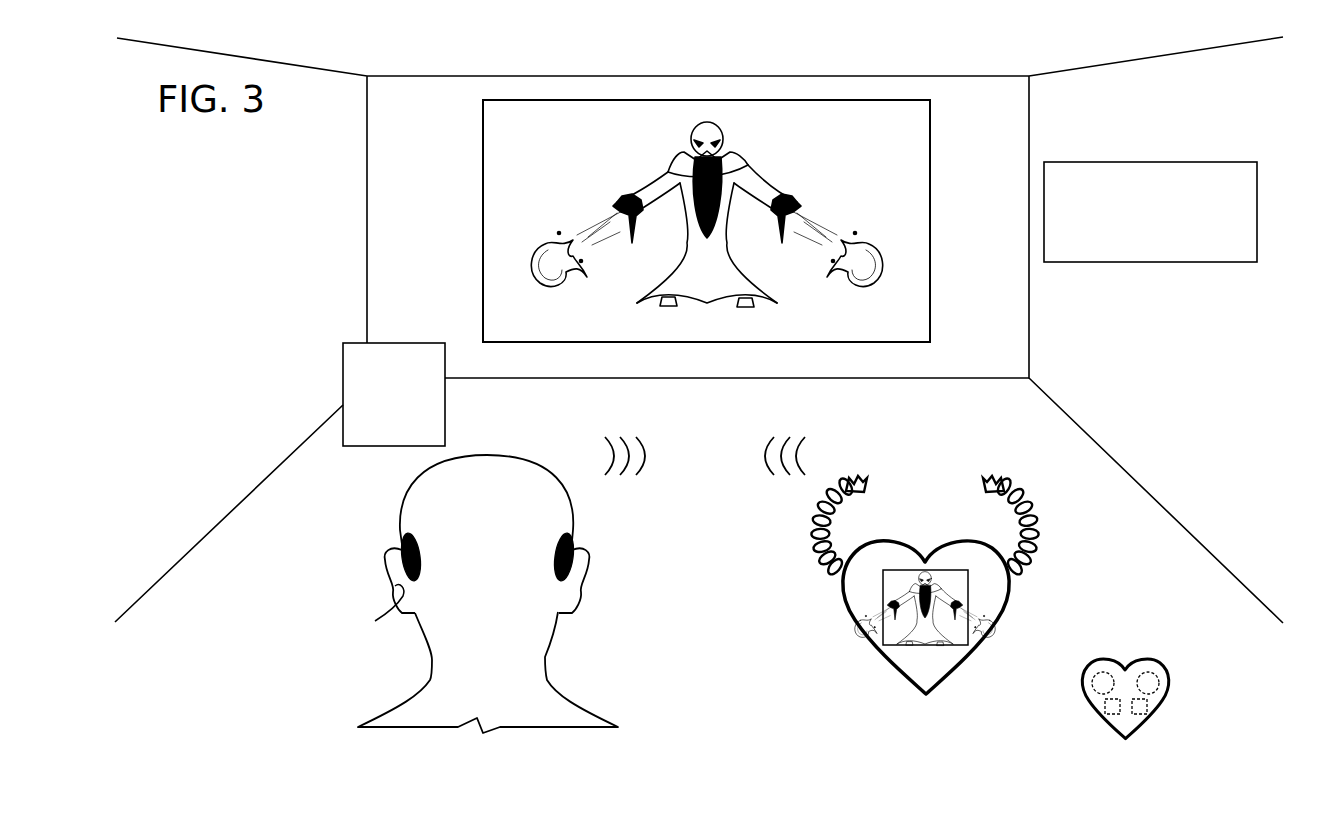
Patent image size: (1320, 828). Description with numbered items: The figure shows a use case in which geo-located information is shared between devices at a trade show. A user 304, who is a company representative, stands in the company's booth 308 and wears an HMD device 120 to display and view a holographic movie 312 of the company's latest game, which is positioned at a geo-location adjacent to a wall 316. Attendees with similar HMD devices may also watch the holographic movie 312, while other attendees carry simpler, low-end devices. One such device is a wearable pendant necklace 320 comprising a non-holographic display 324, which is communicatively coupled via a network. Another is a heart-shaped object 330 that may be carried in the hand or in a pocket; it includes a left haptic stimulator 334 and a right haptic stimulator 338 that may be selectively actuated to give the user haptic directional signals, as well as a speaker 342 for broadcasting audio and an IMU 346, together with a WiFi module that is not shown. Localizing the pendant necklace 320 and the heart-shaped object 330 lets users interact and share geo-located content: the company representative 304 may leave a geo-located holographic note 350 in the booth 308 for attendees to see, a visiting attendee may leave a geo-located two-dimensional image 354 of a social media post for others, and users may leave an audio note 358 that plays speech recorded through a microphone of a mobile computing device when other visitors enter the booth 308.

The HMD device 120 is at (400, 612).
The user 304 is at (488, 594).
The booth 308 is at (447, 86).
The holographic movie 312 is at (724, 95).
The wall 316 is at (988, 92).
The pendant necklace 320 is at (925, 557).
The non-holographic display 324 is at (884, 624).
The heart-shaped object 330 is at (1122, 661).
The left haptic stimulator 334 is at (1097, 675).
The right haptic stimulator 338 is at (1152, 673).
The speaker 342 is at (1115, 715).
The IMU 346 is at (1138, 715).
The geo-located holographic note 350 is at (342, 393).
The geo-located two-dimensional image 354 is at (1155, 160).
The audio note 358 is at (722, 432).